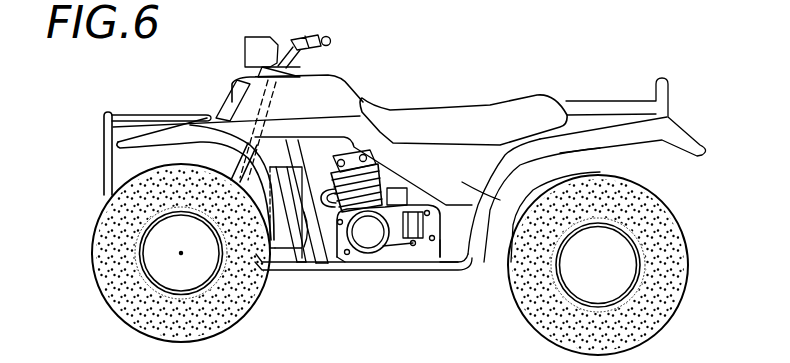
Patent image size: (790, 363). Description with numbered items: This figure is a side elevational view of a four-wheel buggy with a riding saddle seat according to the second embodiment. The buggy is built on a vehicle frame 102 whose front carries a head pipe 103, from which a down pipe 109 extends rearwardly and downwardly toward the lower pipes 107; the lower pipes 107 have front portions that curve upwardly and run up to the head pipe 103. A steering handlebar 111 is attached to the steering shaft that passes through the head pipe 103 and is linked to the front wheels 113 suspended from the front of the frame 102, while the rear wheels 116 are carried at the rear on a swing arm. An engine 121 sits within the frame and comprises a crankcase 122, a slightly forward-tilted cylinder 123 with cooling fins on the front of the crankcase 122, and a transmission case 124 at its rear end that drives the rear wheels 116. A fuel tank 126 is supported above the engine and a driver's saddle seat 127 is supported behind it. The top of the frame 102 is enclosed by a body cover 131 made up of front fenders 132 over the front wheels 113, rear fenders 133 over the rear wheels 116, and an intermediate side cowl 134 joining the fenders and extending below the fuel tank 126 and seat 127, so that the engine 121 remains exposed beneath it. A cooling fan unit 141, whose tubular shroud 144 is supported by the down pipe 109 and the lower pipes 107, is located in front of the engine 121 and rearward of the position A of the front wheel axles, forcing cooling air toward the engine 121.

The vehicle frame 102 is at (401, 286).
The head pipe 103 is at (233, 100).
The lower pipes 107 is at (333, 264).
The down pipe 109 is at (278, 163).
The steering handlebar 111 is at (279, 48).
The front wheels 113 is at (92, 253).
The rear wheels 116 is at (661, 326).
The engine 121 is at (393, 163).
The crankcase 122 is at (345, 262).
The cylinder 123 is at (373, 156).
The transmission case 124 is at (450, 258).
The fuel tank 126 is at (328, 80).
The driver's saddle seat 127 is at (472, 110).
The body cover 131 is at (494, 150).
The front fenders 132 is at (146, 138).
The rear fenders 133 is at (624, 140).
The intermediate side cowl 134 is at (500, 200).
The cooling fan unit 141 is at (262, 210).
The tubular shroud 144 is at (304, 263).
The position of the axles of the front wheels A is at (181, 253).